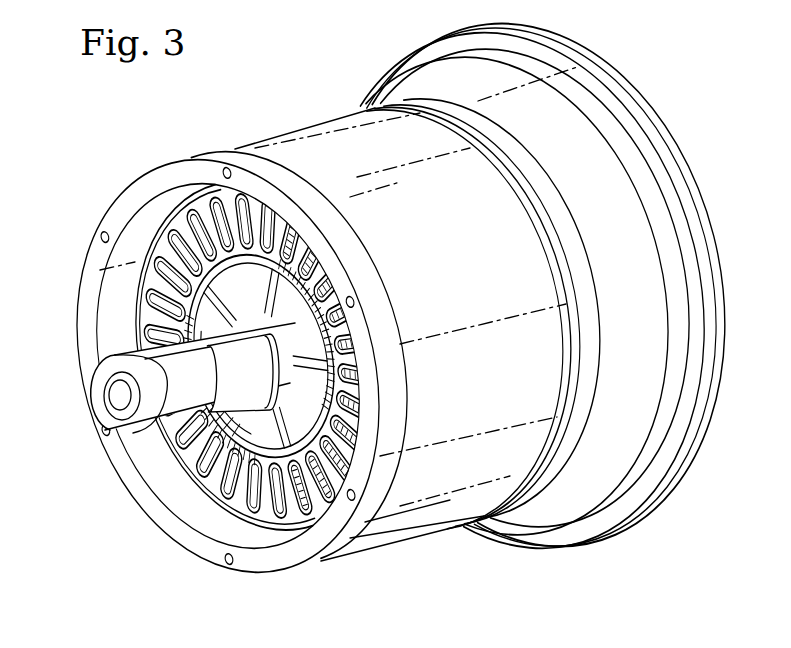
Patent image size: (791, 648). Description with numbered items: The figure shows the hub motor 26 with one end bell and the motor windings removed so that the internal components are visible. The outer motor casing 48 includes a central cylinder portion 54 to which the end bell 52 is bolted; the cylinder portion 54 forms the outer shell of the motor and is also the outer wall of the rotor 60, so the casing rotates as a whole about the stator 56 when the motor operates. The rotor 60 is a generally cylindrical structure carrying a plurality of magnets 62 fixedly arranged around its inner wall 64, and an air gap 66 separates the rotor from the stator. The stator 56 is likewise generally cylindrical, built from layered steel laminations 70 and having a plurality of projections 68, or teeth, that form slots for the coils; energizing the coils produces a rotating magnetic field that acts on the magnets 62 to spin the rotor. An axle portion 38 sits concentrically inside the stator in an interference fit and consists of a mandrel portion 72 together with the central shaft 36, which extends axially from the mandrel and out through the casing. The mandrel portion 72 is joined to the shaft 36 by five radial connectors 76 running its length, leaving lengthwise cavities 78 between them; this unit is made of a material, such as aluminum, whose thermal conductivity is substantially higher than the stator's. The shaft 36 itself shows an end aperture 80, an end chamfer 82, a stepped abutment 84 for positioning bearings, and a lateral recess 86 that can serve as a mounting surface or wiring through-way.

The hub motor 26 is at (79, 184).
The shaft 36 is at (169, 387).
The axle portion 38 is at (232, 414).
The motor casing 48 is at (337, 143).
The end bell 52 is at (591, 237).
The cylinder portion 54 is at (416, 240).
The stator 56 is at (193, 277).
The rotor 60 is at (180, 193).
The magnets 62 is at (167, 230).
The inner wall 64 is at (207, 507).
The air gap 66 is at (193, 200).
The projections 68 is at (227, 210).
The laminations 70 is at (310, 457).
The mandrel portion 72 is at (330, 333).
The radial connectors 76 is at (272, 312).
The lengthwise cavities 78 is at (230, 420).
The end apertures 80 is at (120, 397).
The end chamfers 82 is at (108, 431).
The stepped abutments 84 is at (180, 352).
The lateral recess 86 is at (229, 385).